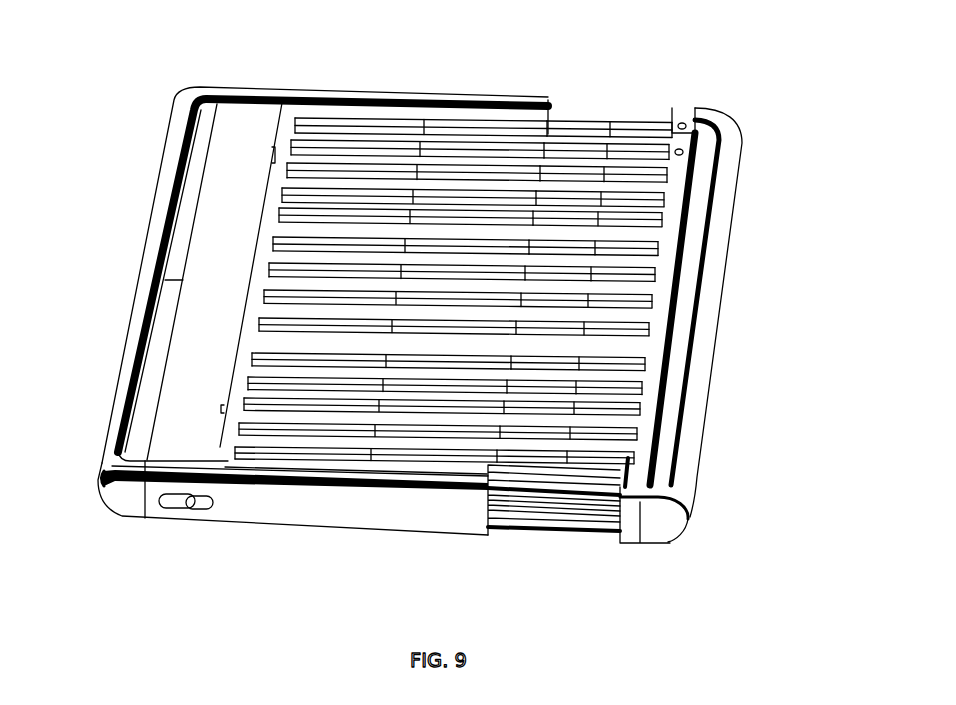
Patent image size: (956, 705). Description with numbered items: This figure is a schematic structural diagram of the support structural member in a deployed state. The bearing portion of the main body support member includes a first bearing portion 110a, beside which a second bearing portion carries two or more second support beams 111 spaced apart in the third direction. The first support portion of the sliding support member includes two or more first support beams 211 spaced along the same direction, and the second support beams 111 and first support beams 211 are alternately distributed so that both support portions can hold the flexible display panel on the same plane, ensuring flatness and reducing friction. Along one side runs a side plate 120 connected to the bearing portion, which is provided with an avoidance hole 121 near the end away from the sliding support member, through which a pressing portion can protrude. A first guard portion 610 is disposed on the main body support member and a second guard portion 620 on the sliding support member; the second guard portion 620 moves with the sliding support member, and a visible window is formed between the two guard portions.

The first bearing portion 110a is at (243, 117).
The second support beams 111 is at (343, 137).
The first support beams 211 is at (610, 137).
The first guard portion 610 is at (167, 173).
The second guard portion 620 is at (692, 412).
The side plate 120 is at (320, 512).
The avoidance hole 121 is at (193, 508).